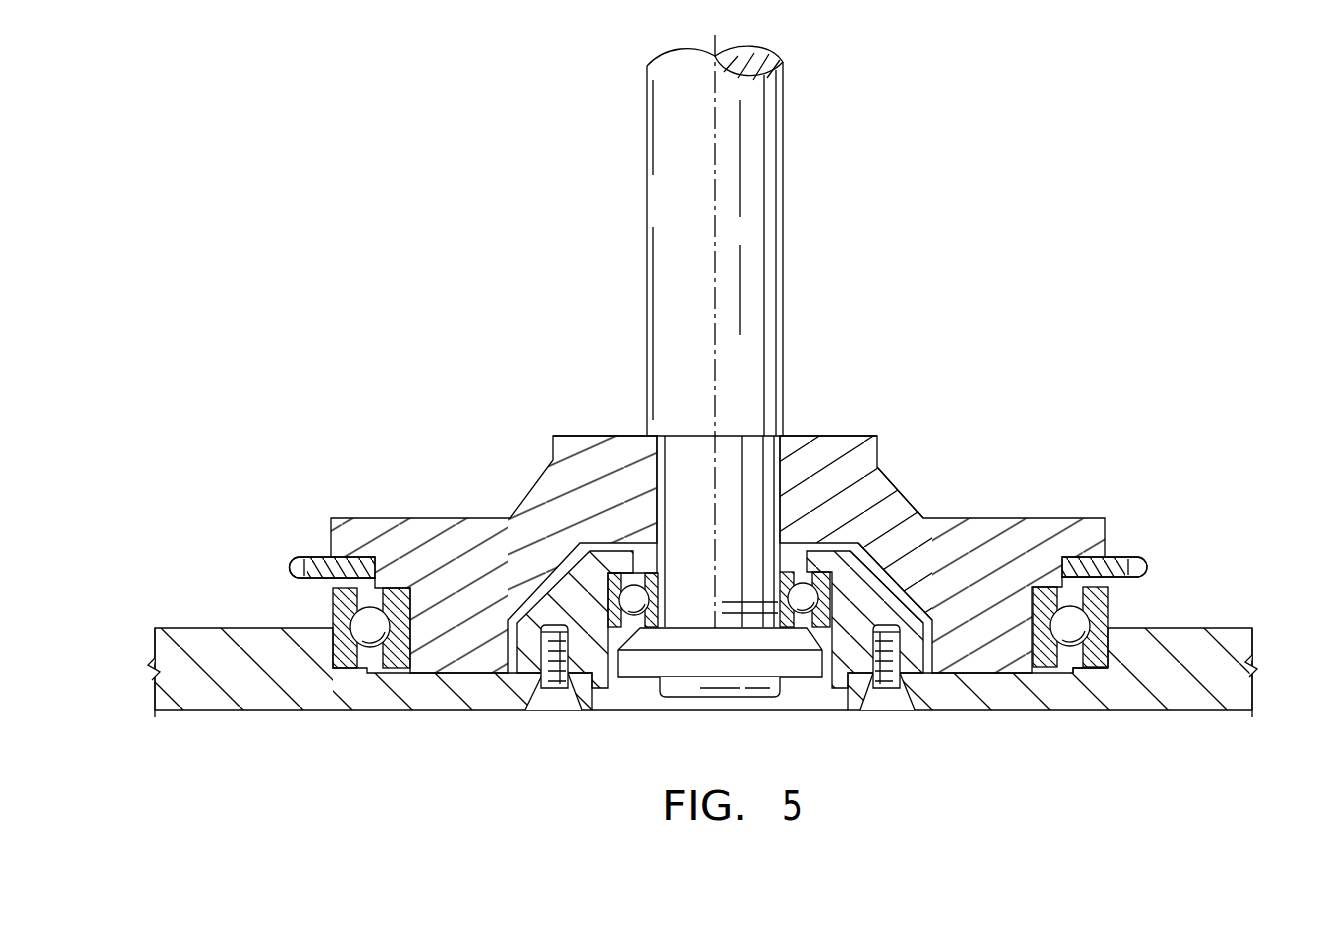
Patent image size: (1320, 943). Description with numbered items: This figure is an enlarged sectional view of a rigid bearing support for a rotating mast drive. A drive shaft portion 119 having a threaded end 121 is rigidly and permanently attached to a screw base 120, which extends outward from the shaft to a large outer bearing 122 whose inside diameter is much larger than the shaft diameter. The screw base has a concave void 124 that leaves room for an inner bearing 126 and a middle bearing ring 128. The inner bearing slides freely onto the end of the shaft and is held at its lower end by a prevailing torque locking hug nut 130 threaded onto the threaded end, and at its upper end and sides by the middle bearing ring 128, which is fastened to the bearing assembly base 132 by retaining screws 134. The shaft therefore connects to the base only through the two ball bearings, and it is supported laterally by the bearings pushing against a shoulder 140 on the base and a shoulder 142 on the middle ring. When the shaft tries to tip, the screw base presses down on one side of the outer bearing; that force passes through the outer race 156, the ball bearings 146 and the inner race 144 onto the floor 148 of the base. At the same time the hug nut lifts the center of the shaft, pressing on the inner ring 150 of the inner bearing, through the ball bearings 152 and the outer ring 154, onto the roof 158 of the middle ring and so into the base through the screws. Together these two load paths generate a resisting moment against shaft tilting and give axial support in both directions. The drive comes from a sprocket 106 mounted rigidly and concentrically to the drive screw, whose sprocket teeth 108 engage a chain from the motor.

The sprocket 106 is at (1133, 548).
The sprocket teeth 108 is at (278, 568).
The drive shaft portion 119 is at (774, 176).
The screw base 120 is at (980, 514).
The threaded end 121 is at (712, 690).
The outer bearing 122 is at (1115, 602).
The concave void 124 is at (832, 574).
The inner bearing 126 is at (825, 572).
The middle bearing ring 128 is at (568, 578).
The hug nut 130 is at (800, 668).
The bearing assembly base 132 is at (1232, 627).
The retaining screws 134 is at (560, 697).
The shoulder 140 is at (342, 628).
The shoulder 142 is at (599, 560).
The inner race 144 is at (1132, 622).
The ball bearings 146 is at (1078, 612).
The floor 148 is at (1118, 654).
The inner ring 150 is at (788, 575).
The ball bearings 152 is at (636, 606).
The outer ring 154 is at (875, 568).
The outer race 156 is at (342, 596).
The roof 158 is at (628, 572).